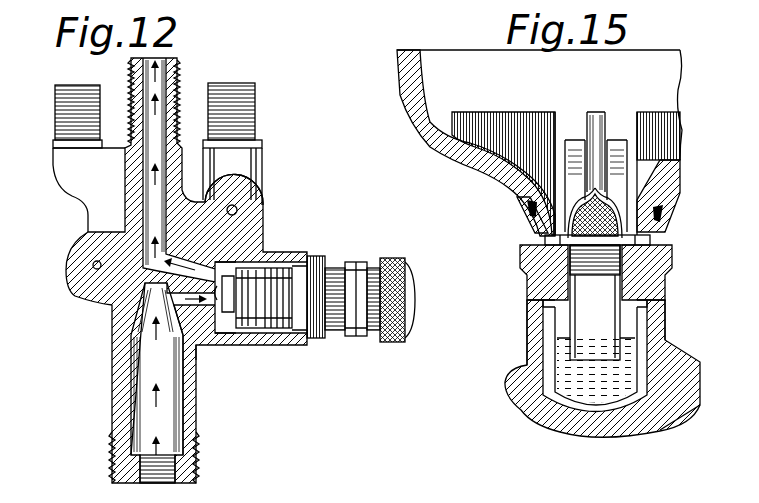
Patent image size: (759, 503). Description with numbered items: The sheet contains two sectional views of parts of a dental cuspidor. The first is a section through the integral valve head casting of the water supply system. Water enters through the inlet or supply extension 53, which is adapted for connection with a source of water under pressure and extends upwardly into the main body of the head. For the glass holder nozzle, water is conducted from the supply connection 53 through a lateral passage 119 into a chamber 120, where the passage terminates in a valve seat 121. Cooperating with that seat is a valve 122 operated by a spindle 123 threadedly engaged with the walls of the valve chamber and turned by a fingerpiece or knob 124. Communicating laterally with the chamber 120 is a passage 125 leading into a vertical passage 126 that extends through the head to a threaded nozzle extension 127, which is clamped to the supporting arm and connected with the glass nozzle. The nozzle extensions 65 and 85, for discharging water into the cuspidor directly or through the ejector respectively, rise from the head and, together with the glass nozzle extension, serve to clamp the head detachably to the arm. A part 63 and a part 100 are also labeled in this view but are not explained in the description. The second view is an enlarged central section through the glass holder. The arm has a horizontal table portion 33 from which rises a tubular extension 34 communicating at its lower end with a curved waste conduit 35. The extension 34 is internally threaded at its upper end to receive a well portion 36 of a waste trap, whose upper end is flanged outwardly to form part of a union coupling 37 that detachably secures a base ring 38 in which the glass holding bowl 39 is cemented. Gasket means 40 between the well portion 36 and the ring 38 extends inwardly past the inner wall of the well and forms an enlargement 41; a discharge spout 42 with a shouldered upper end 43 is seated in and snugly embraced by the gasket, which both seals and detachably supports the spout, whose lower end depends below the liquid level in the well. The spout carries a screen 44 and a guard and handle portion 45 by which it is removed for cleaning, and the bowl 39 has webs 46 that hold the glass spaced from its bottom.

In FIG. 12, the threaded nozzle extension 127 is at (174, 62).
In FIG. 12, the nozzle extension 85 is at (56, 112).
In FIG. 12, the vertical passage 126 is at (84, 219).
In FIG. 12, the nozzle extension 65 is at (256, 124).
In FIG. 12, the mounting lobe 63 is at (258, 190).
In FIG. 12, the passage 125 is at (263, 213).
In FIG. 12, the valve 122 is at (273, 268).
In FIG. 12, the spindle 123 is at (289, 266).
In FIG. 12, the fingerpiece or knob 124 is at (392, 259).
In FIG. 12, the valve seat 121 is at (218, 303).
In FIG. 12, the chamber 120 is at (260, 317).
In FIG. 12, the lateral passage 119 is at (200, 345).
In FIG. 12, the inlet or supply extension 53 is at (198, 414).
In FIG. 12, the body 100 is at (140, 496).
In FIG. 15, the webs 46 is at (545, 102).
In FIG. 15, the glass holding bowl 39 is at (412, 107).
In FIG. 15, the guard and handle portion 45 is at (607, 197).
In FIG. 15, the screen 44 is at (622, 216).
In FIG. 15, the enlargement 41 is at (667, 228).
In FIG. 15, the gasket means 40 is at (672, 247).
In FIG. 15, the base ring 38 is at (536, 239).
In FIG. 15, the union coupling 37 is at (521, 267).
In FIG. 15, the well portion 36 is at (541, 300).
In FIG. 15, the tubular extension 34 is at (528, 324).
In FIG. 15, the horizontal table portion 33 is at (683, 358).
In FIG. 15, the curved waste conduit 35 is at (580, 402).
In FIG. 15, the discharge spout 42 is at (612, 302).
In FIG. 15, the shouldered upper end 43 is at (593, 262).